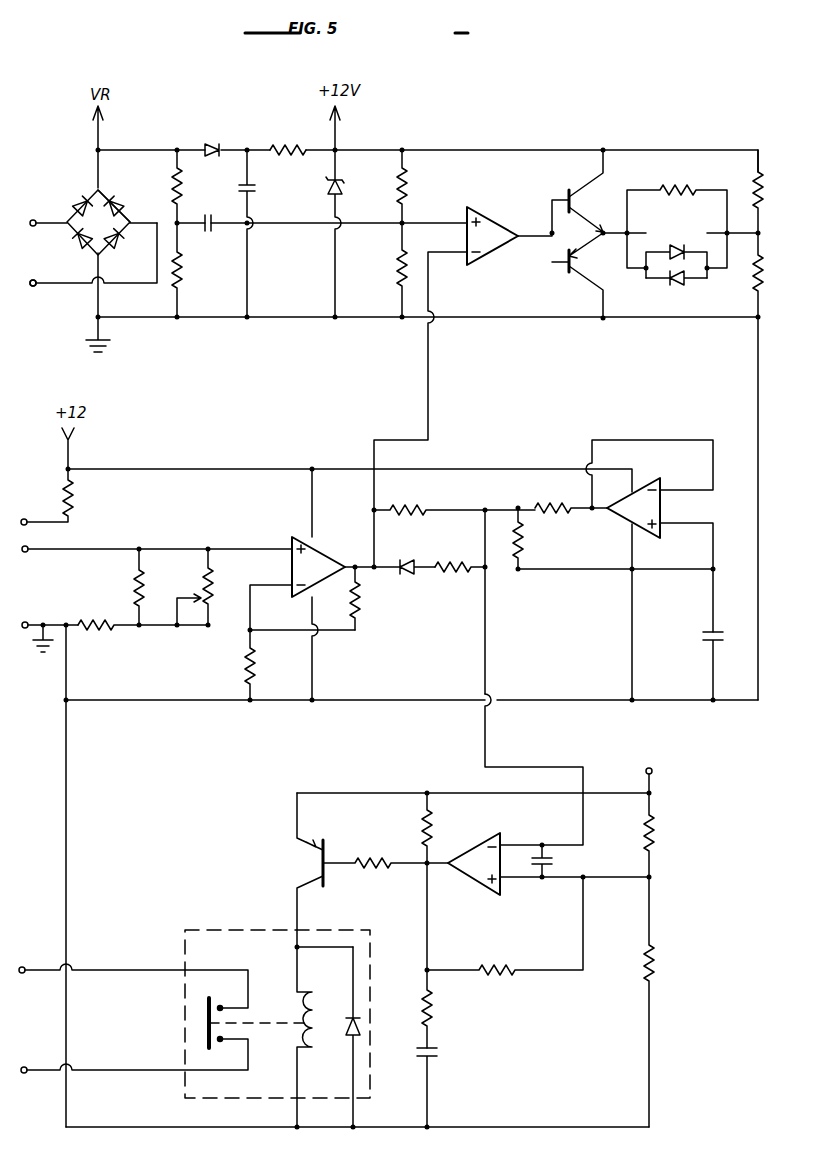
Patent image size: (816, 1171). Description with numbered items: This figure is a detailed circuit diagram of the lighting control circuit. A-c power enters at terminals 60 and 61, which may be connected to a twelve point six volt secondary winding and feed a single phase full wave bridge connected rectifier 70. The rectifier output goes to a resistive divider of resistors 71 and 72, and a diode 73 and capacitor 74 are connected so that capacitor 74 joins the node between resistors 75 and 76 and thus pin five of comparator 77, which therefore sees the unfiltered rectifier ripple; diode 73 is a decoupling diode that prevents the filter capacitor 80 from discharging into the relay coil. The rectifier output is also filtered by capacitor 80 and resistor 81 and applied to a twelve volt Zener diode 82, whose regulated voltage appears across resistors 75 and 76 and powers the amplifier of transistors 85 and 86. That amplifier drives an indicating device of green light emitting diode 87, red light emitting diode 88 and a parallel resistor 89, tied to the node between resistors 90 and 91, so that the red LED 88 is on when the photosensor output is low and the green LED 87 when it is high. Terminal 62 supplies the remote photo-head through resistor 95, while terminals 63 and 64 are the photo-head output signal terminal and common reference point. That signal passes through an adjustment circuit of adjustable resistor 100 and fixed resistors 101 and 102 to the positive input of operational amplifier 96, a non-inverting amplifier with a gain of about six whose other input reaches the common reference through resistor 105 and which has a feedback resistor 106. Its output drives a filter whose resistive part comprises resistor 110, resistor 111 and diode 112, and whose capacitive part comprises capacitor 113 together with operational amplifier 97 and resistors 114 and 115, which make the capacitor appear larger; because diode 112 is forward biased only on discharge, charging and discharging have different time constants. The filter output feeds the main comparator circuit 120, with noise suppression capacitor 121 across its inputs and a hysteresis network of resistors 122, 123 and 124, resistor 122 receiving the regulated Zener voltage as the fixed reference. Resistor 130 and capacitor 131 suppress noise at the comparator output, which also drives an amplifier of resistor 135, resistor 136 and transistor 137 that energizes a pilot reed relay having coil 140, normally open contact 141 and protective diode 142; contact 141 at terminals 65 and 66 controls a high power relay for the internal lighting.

The a-c power terminal 60 is at (54, 197).
The a-c power terminal 61 is at (33, 290).
The photo-head supply voltage terminal 62 is at (29, 518).
The photo-head output signal terminal 63 is at (28, 553).
The photo-head common reference point 64 is at (30, 618).
The terminal 65 is at (26, 966).
The terminal 66 is at (26, 1078).
The full wave bridge connected rectifier 70 is at (108, 198).
The resistor 71 is at (172, 190).
The resistor 72 is at (184, 277).
The diode 73 is at (212, 142).
The capacitor 74 is at (208, 233).
The resistor 75 is at (409, 199).
The resistor 76 is at (400, 256).
The comparator 77 is at (487, 214).
The filter capacitor 80 is at (256, 189).
The resistor 81 is at (287, 145).
The Zener diode 82 is at (343, 189).
The transistor 85 is at (576, 206).
The transistor 86 is at (576, 262).
The light emitting diode 87 is at (690, 232).
The light emitting diode 88 is at (666, 289).
The parallel resistor 89 is at (689, 172).
The resistor 90 is at (752, 192).
The resistor 91 is at (750, 276).
The resistor 95 is at (73, 498).
The operational amplifier 96 is at (322, 552).
The operational amplifier 97 is at (665, 508).
The adjustable resistor 100 is at (200, 590).
The fixed resistor 101 is at (134, 586).
The fixed resistor 102 is at (94, 630).
The resistor 105 is at (245, 650).
The feedback resistor 106 is at (364, 620).
The filter resistor 110 is at (432, 499).
The filter resistor 111 is at (463, 548).
The diode 112 is at (406, 578).
The capacitor 113 is at (703, 636).
The resistor 114 is at (529, 539).
The resistor 115 is at (558, 490).
The main comparator circuit 120 is at (470, 876).
The noise suppression capacitor 121 is at (555, 862).
The resistor 122 is at (656, 840).
The resistor 123 is at (505, 952).
The resistor 124 is at (658, 968).
The resistor 130 is at (438, 1008).
The capacitor 131 is at (440, 1056).
The resistor 135 is at (433, 836).
The resistor 136 is at (370, 858).
The transistor 137 is at (318, 862).
The coil 140 is at (315, 1052).
The normally open contact 141 is at (230, 992).
The protective diode 142 is at (340, 1015).